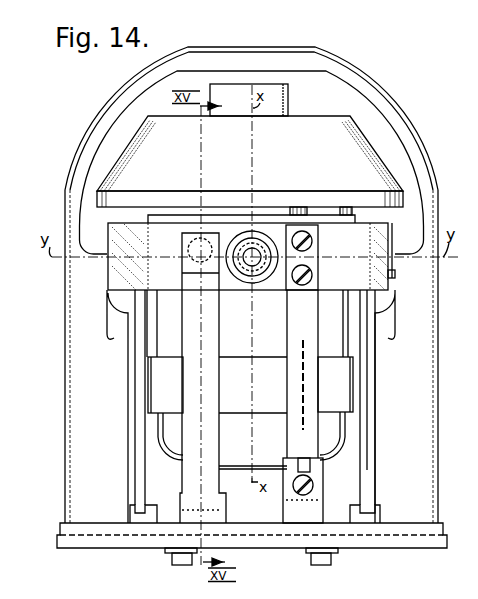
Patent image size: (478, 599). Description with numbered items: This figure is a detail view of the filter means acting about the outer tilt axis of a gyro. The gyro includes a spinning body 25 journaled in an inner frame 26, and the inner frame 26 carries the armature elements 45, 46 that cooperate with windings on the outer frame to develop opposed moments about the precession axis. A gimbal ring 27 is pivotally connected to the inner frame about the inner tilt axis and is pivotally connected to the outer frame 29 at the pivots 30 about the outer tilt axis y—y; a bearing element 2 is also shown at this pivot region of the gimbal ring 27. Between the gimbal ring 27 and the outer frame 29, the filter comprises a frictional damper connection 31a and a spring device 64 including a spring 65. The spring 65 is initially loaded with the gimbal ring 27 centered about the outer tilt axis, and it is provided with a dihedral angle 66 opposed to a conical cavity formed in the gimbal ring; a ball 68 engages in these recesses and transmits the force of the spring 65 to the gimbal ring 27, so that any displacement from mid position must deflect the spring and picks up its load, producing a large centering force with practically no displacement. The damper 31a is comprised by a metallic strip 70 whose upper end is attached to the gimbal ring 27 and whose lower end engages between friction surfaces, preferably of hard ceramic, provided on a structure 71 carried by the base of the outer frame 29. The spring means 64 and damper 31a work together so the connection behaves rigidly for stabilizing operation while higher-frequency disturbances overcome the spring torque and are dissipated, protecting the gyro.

The ball bearing 2 is at (258, 250).
The spinning body 25 is at (317, 132).
The inner frame 26 is at (160, 390).
The gimbal ring 27 is at (158, 235).
The outer frame 29 is at (423, 364).
The pivotal connection 30 is at (108, 288).
The frictional damper connection 31a is at (295, 399).
The armature element 45 is at (141, 452).
The armature element 46 is at (366, 486).
The spring device 64 is at (213, 356).
The spring 65 is at (208, 406).
The dihedral angle 66 is at (210, 275).
The ball 68 is at (184, 266).
The metallic strip 70 is at (298, 320).
The structure 71 is at (322, 487).